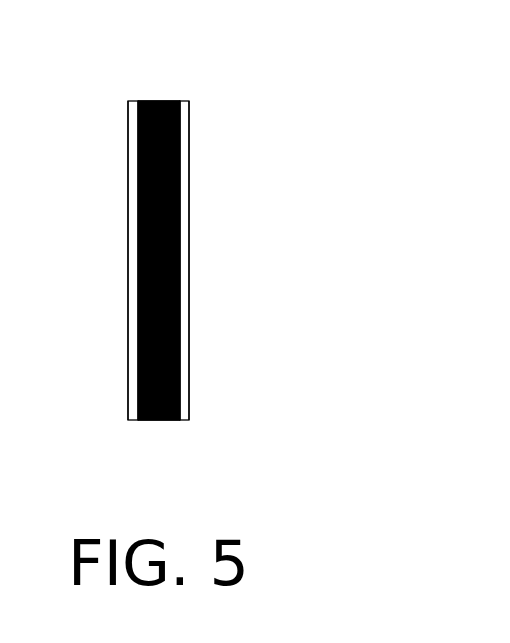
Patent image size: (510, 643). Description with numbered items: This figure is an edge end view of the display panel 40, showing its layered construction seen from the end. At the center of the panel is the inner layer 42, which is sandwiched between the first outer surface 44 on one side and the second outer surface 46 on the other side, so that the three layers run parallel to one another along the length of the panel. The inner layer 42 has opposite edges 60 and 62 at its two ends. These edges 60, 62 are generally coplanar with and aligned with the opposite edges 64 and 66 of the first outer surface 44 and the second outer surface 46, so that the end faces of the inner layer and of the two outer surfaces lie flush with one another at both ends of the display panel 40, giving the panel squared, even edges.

The display panel 40 is at (217, 180).
The inner layer 42 is at (165, 101).
The first outer surface 44 is at (128, 230).
The second outer surface 46 is at (189, 252).
The edge of inner layer 60 is at (152, 101).
The edge of inner layer 62 is at (160, 420).
The edge of outer surface 64 is at (133, 101).
The edge of outer surface 66 is at (185, 101).